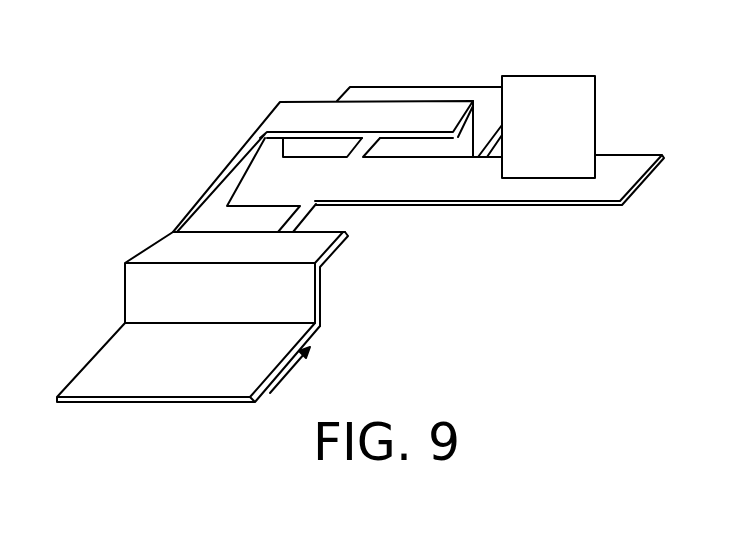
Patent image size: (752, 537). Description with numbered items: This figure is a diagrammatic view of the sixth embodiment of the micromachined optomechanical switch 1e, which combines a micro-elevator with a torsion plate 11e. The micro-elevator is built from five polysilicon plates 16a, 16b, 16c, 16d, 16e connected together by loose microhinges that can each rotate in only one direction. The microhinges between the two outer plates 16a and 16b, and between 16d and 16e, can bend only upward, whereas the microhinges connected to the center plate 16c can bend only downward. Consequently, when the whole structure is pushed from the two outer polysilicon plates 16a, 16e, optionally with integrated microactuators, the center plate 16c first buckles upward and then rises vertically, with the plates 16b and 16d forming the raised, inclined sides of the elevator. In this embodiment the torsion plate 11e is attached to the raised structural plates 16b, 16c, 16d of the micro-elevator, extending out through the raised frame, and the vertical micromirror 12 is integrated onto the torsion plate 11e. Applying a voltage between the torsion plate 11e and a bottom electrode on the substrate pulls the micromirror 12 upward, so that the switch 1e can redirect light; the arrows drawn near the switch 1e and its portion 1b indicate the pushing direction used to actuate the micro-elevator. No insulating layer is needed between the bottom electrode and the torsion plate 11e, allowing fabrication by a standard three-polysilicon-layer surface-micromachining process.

The optical switch 1b is at (331, 254).
The optical switch 1e is at (249, 97).
The torsion plate 11e is at (443, 190).
The vertical micromirror 12 is at (562, 143).
The polysilicon plate 16a is at (210, 376).
The polysilicon plate 16b is at (245, 303).
The center plate 16c is at (178, 218).
The polysilicon plate 16d is at (478, 106).
The polysilicon plate 16e is at (495, 96).